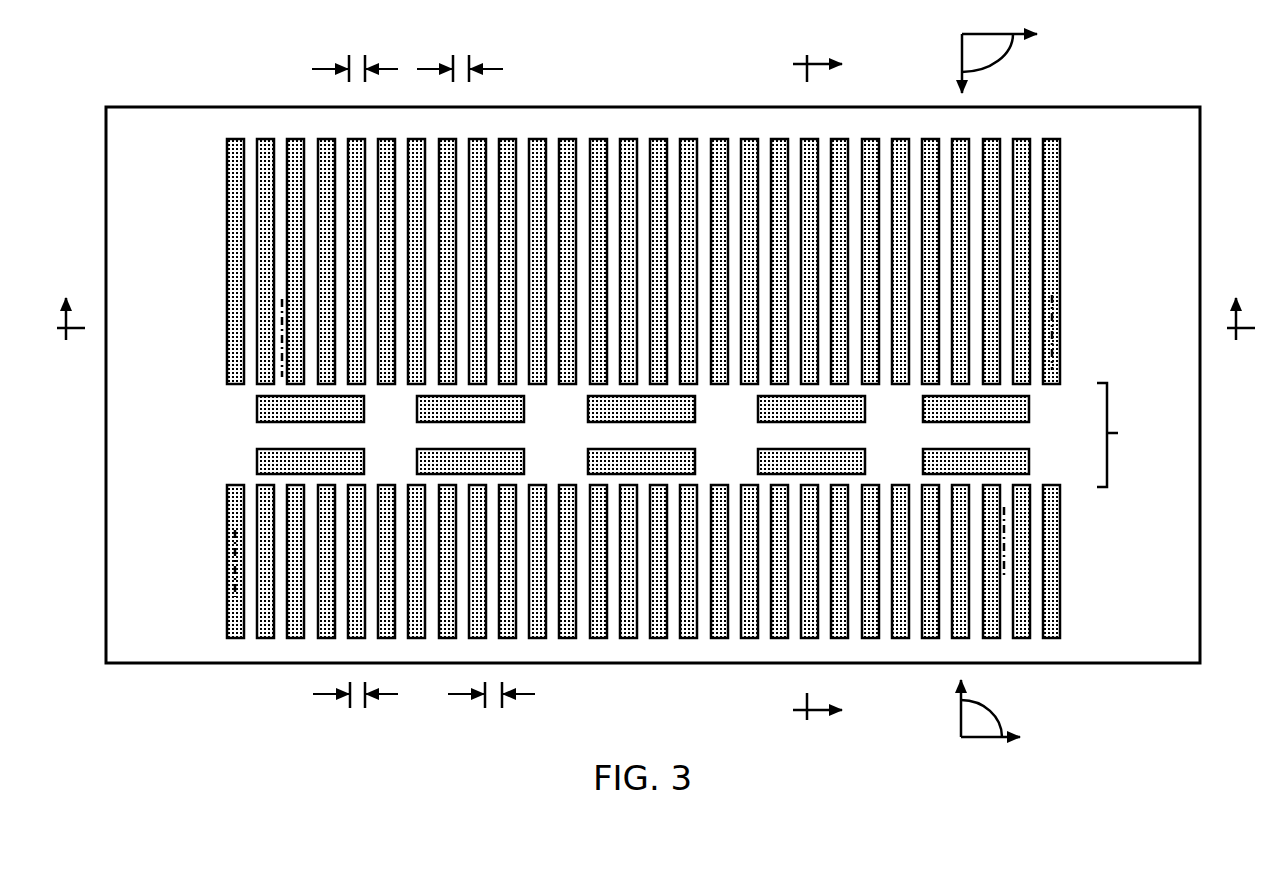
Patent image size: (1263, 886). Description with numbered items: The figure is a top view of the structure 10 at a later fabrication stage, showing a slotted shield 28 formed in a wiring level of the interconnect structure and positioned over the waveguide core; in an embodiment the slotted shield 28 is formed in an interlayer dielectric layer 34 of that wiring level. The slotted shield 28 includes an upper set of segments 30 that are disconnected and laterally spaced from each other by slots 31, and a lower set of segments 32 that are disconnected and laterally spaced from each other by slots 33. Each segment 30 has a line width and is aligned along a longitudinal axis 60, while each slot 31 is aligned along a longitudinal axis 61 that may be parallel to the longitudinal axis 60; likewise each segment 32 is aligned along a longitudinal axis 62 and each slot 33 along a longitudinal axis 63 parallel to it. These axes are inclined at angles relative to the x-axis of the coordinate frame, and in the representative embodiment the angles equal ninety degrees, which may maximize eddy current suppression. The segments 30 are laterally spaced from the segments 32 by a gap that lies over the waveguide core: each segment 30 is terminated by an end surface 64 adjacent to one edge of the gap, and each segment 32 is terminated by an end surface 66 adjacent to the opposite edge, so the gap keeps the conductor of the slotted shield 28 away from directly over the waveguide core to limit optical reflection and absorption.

The antenna assembly 10 is at (214, 90).
The slotted shield 28 is at (213, 153).
The segments 30 is at (295, 281).
The slots 31 is at (282, 229).
The segments 32 is at (267, 616).
The slots 33 is at (283, 527).
The interlayer dielectric layer 34 is at (1162, 642).
The longitudinal axis 60 is at (1052, 327).
The longitudinal axis 61 is at (283, 355).
The longitudinal axis 62 is at (235, 562).
The longitudinal axis 63 is at (1008, 565).
The end surface 64 is at (572, 384).
The end surface 66 is at (383, 485).